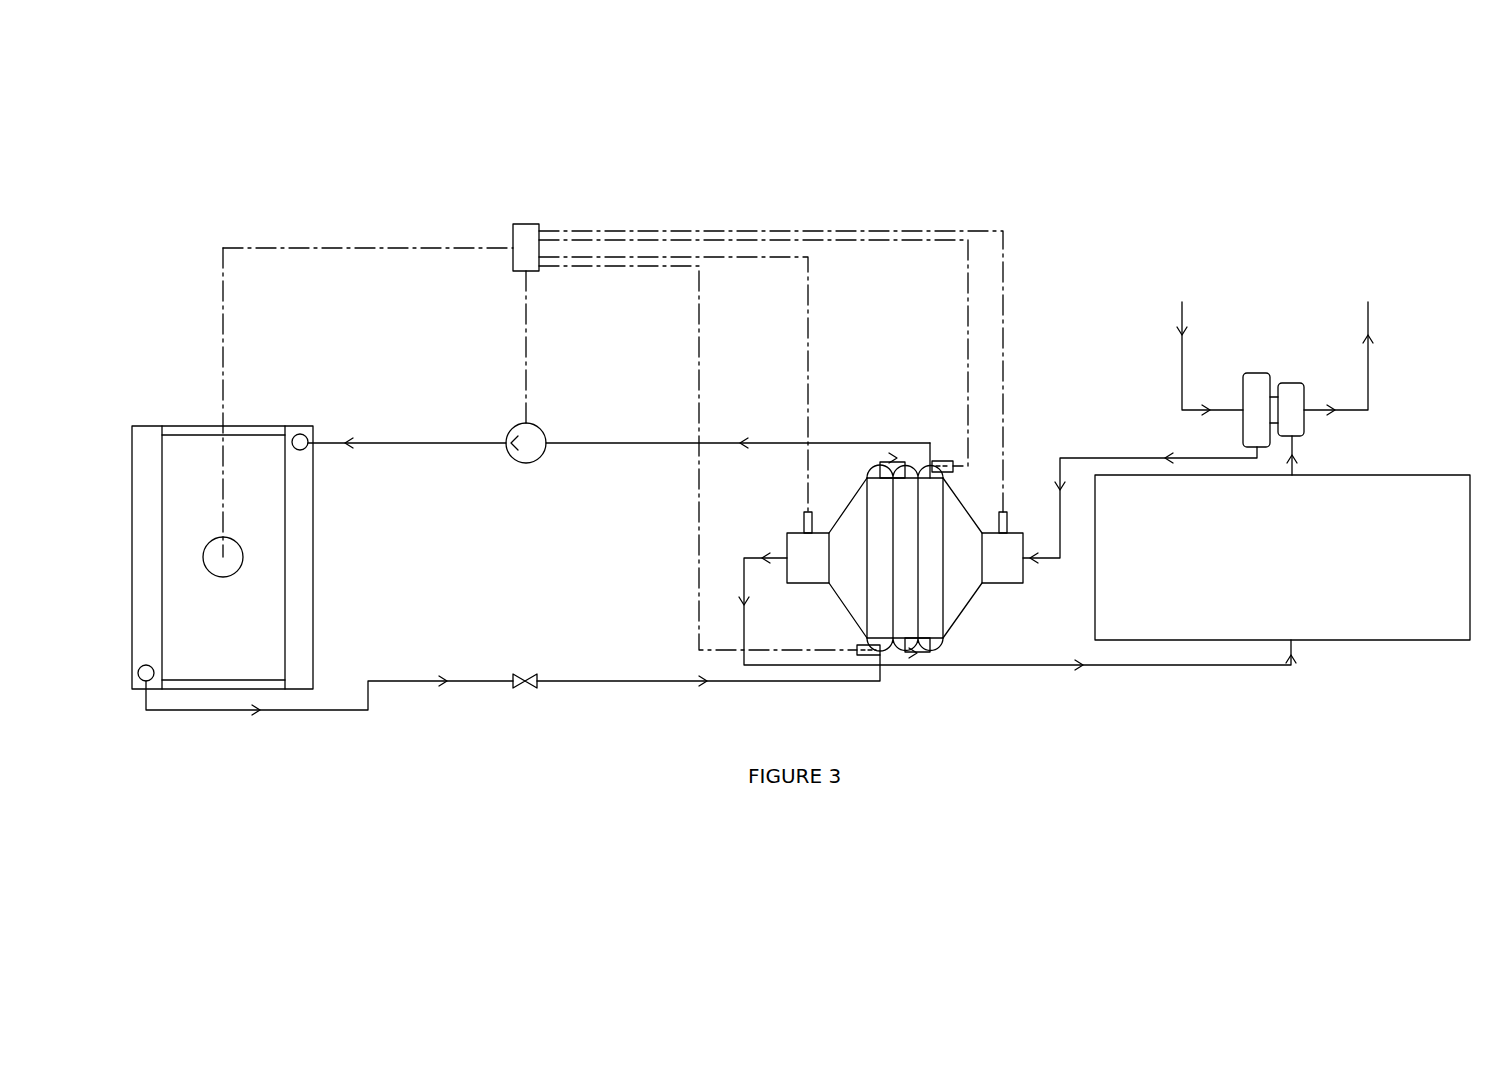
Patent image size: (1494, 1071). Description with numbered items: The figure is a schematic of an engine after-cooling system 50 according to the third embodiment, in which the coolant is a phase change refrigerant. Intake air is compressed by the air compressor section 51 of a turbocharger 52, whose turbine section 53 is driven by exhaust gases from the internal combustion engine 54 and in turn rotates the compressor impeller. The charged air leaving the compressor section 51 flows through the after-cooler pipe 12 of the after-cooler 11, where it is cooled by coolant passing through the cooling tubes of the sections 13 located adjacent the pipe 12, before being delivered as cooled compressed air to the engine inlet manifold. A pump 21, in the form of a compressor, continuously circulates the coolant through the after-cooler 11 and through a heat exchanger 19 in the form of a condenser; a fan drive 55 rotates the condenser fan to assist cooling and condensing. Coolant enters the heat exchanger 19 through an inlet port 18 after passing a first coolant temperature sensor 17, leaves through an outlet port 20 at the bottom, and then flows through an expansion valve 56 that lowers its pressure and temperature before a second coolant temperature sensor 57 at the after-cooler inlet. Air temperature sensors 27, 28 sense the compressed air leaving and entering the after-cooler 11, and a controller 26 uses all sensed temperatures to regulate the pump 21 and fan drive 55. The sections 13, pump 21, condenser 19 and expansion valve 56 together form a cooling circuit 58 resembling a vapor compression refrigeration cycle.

The after-cooler 11 is at (891, 555).
The after-cooler pipe 12 is at (808, 583).
The sections 13 is at (930, 595).
The first coolant temperature sensor 17 is at (943, 444).
The inlet port 18 is at (296, 434).
The heat exchanger 19 is at (222, 557).
The outlet port 20 is at (142, 681).
The pump 21 is at (520, 480).
The controller 26 is at (523, 208).
The air temperature sensor 27 is at (787, 516).
The air temperature sensor 28 is at (1018, 507).
The engine after-cooling system 50 is at (1054, 252).
The air compressor section 51 is at (1253, 373).
The turbocharger 52 is at (1270, 360).
The turbine section 53 is at (1292, 383).
The internal combustion engine 54 is at (1282, 538).
The fan drive 55 is at (237, 540).
The expansion valve 56 is at (522, 660).
The second coolant temperature sensor 57 is at (846, 632).
The cooling circuit 58 is at (456, 723).